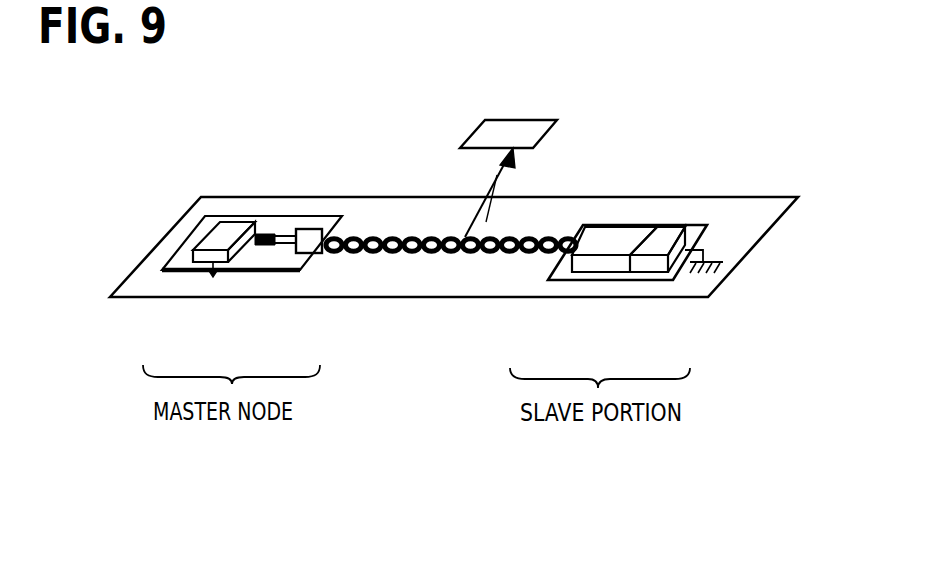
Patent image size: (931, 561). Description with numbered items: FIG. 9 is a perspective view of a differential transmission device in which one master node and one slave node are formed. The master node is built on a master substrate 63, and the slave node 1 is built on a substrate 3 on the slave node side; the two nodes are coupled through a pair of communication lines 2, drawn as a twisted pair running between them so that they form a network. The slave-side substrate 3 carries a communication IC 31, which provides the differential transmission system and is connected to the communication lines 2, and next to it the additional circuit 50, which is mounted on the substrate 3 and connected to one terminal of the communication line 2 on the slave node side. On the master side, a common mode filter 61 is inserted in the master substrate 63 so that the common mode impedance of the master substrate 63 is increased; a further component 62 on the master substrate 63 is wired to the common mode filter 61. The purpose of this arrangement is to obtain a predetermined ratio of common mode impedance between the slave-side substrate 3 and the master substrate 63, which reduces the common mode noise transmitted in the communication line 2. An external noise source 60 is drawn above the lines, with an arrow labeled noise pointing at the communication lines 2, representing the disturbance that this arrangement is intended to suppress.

The slave node 1 is at (698, 208).
The communication lines 2 is at (370, 252).
The substrate 3 is at (618, 282).
The communication IC 31 is at (605, 238).
The additional circuit 50 is at (658, 243).
The noise source 60 is at (511, 133).
The common mode filter 61 is at (313, 238).
The master microcomputer 62 is at (222, 240).
The master substrate 63 is at (252, 272).